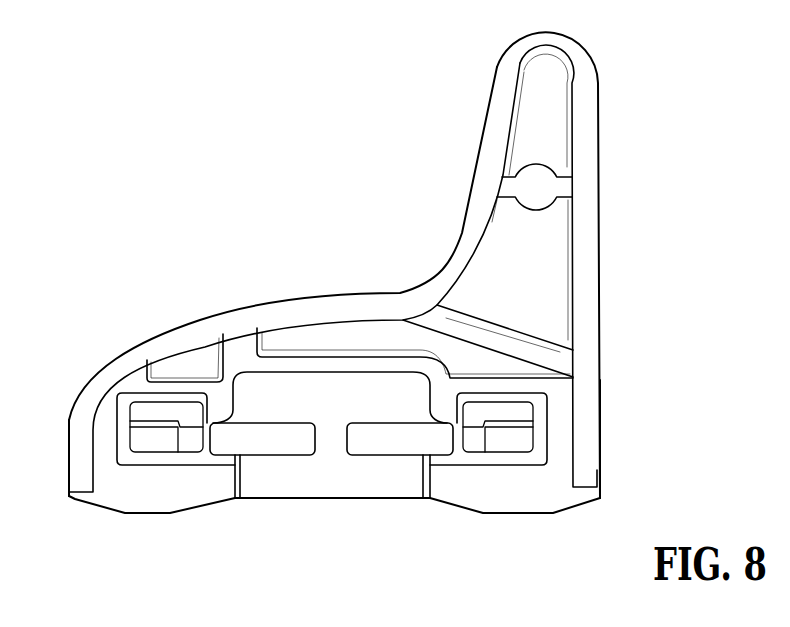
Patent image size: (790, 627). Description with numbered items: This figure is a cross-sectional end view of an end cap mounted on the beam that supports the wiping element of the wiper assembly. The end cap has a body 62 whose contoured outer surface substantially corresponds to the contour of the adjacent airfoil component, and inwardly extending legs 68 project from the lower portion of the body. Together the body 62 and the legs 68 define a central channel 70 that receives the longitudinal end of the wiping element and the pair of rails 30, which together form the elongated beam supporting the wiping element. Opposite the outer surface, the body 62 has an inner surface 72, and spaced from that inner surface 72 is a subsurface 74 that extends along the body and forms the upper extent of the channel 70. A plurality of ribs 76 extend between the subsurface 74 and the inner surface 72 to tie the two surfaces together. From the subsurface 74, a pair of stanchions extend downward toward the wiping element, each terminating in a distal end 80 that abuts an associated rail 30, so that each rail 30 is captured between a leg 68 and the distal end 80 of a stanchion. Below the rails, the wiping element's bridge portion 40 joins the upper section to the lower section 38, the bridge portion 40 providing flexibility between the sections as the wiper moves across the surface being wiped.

The body 62 is at (387, 218).
The central channel 70 is at (218, 516).
The inner surface 72 is at (409, 302).
The subsurface 74 is at (360, 376).
The ribs 76 is at (167, 383).
The rails 30 is at (385, 433).
The bridge portion 40 is at (358, 445).
The lower section 38 is at (397, 490).
The inwardly extending legs 68 is at (133, 502).
The distal end 80 is at (207, 425).